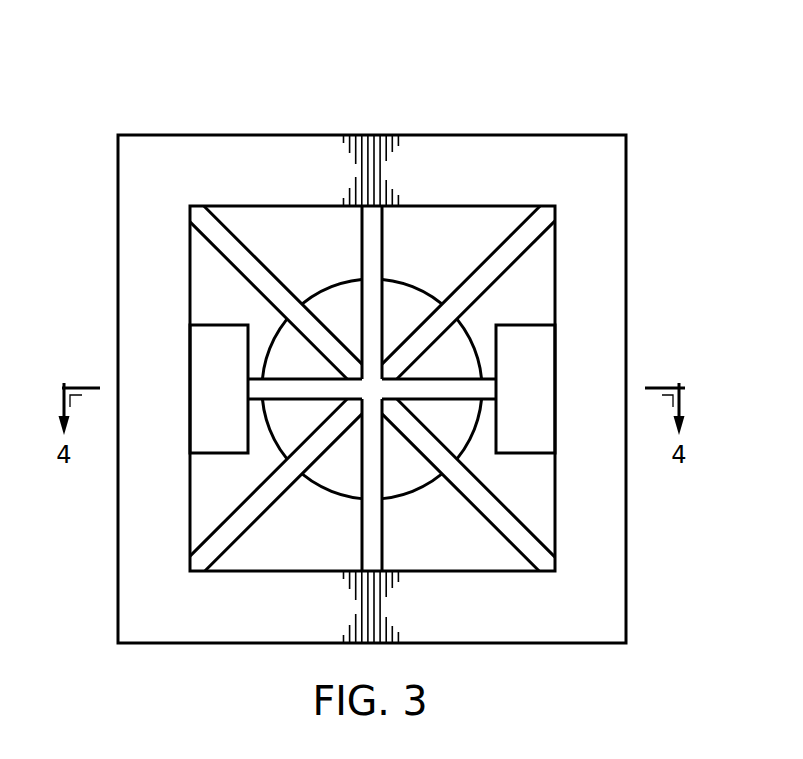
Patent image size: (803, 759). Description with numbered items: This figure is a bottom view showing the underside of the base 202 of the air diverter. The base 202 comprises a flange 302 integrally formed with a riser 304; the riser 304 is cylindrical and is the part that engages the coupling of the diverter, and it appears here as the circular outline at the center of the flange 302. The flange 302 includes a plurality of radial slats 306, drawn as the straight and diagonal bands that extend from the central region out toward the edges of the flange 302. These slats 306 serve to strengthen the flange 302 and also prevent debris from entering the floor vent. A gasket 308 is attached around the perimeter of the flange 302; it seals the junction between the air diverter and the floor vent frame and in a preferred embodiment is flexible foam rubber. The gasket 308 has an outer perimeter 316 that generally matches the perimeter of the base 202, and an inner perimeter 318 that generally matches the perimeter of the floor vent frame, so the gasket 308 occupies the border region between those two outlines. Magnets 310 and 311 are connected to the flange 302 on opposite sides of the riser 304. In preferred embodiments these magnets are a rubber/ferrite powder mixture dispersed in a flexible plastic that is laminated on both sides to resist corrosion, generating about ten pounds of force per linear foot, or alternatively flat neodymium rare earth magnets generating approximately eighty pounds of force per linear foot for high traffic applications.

The base 202 is at (622, 66).
The flange 302 is at (372, 388).
The riser 304 is at (430, 485).
The radial slats 306 is at (373, 240).
The gasket 308 is at (617, 227).
The magnet 310 is at (543, 360).
The magnet 311 is at (202, 360).
The outer perimeter 316 is at (627, 171).
The inner perimeter 318 is at (192, 299).